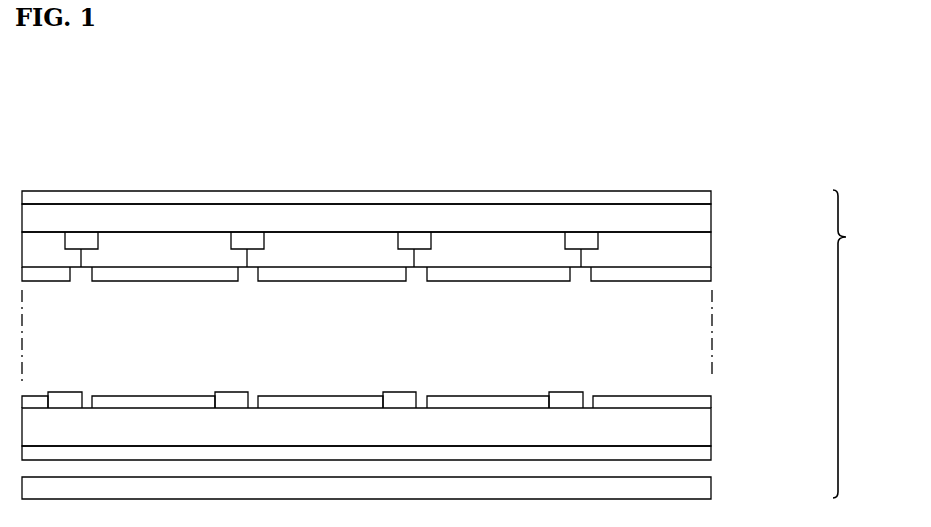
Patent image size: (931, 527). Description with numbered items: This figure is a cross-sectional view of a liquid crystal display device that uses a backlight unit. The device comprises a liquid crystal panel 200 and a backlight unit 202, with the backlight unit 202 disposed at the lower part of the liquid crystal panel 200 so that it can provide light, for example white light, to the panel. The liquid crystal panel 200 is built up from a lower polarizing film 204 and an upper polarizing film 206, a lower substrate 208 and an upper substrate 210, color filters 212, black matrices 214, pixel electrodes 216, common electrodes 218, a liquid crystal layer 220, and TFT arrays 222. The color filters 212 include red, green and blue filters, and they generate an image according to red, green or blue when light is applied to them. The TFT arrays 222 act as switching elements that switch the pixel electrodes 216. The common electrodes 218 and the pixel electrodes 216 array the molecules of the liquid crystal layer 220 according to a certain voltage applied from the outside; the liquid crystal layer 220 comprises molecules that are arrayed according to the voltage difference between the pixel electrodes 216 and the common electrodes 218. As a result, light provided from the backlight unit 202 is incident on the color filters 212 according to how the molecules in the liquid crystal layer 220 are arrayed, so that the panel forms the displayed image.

The liquid crystal panel 200 is at (864, 344).
The backlight unit 202 is at (709, 488).
The lower polarizing film 204 is at (709, 452).
The upper polarizing film 206 is at (81, 198).
The lower substrate 208 is at (709, 423).
The upper substrate 210 is at (215, 213).
The color filters 212 is at (135, 240).
The black matrices 214 is at (418, 240).
The pixel electrodes 216 is at (657, 395).
The common electrodes 218 is at (659, 277).
The liquid crystal layer 220 is at (703, 308).
The TFT arrays 222 is at (574, 394).